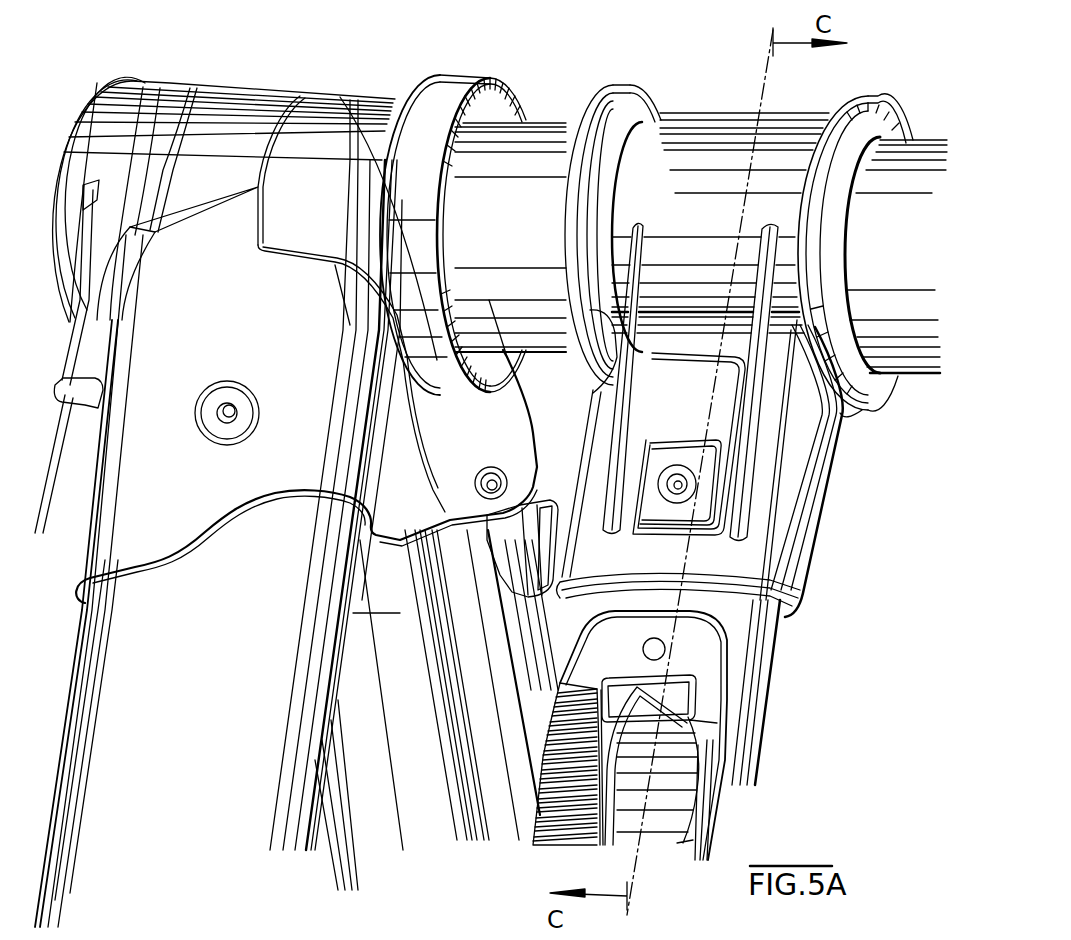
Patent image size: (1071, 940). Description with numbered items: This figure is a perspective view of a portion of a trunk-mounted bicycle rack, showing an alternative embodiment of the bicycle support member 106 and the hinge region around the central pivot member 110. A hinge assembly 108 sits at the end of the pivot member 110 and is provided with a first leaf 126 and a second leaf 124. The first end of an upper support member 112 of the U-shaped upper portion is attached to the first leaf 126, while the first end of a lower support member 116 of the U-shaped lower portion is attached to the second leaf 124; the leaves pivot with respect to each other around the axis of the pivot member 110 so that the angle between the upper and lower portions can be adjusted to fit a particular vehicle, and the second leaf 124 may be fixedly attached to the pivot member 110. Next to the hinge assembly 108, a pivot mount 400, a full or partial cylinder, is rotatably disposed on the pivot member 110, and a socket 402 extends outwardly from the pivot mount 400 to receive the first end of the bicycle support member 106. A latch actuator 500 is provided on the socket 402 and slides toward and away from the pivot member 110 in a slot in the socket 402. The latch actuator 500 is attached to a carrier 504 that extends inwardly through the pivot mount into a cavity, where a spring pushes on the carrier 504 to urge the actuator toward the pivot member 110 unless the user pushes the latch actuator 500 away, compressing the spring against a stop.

The bicycle support member 106 is at (747, 730).
The hinge assembly 108 is at (385, 127).
The pivot member 110 is at (530, 143).
The upper support member 112 is at (240, 647).
The lower support member 116 is at (440, 760).
The second leaf 124 is at (228, 112).
The first leaf 126 is at (183, 502).
The pivot mount 400 is at (723, 130).
The socket 402 is at (713, 418).
The latch actuator 500 is at (780, 365).
The carrier 504 is at (693, 490).